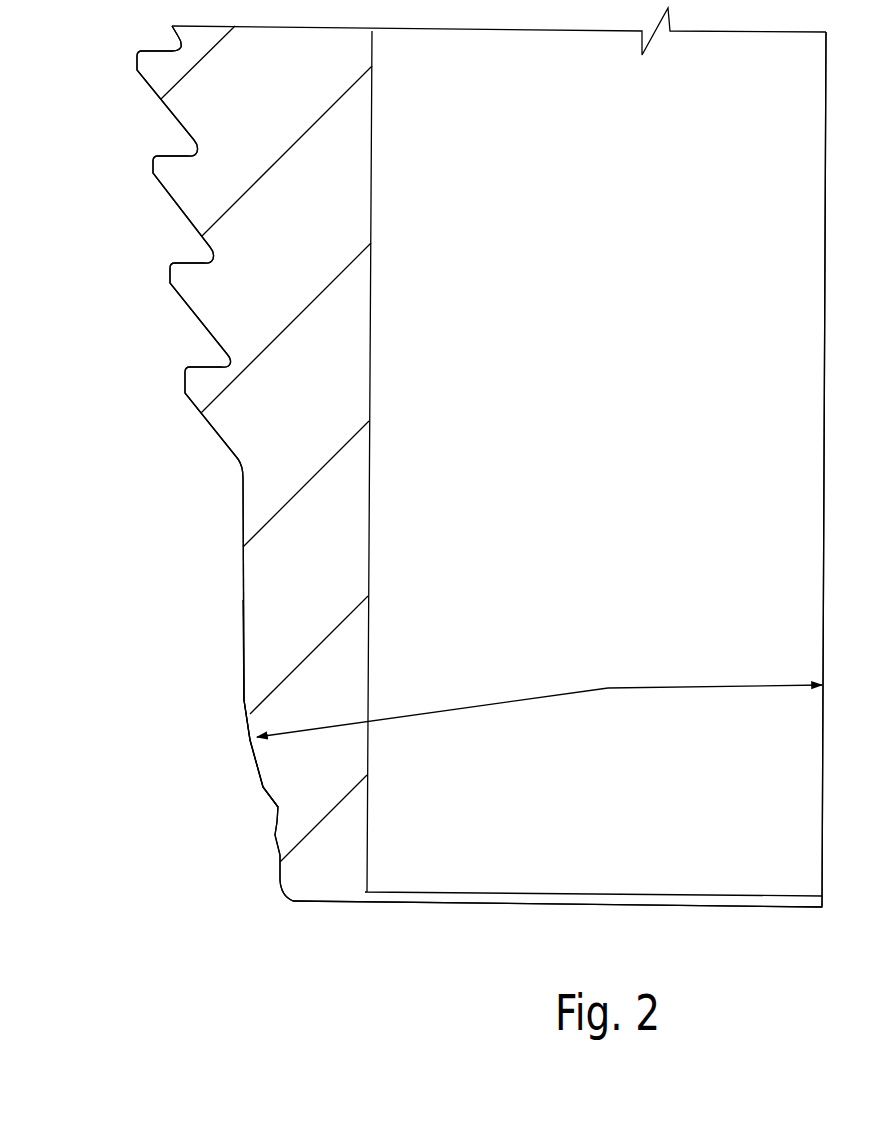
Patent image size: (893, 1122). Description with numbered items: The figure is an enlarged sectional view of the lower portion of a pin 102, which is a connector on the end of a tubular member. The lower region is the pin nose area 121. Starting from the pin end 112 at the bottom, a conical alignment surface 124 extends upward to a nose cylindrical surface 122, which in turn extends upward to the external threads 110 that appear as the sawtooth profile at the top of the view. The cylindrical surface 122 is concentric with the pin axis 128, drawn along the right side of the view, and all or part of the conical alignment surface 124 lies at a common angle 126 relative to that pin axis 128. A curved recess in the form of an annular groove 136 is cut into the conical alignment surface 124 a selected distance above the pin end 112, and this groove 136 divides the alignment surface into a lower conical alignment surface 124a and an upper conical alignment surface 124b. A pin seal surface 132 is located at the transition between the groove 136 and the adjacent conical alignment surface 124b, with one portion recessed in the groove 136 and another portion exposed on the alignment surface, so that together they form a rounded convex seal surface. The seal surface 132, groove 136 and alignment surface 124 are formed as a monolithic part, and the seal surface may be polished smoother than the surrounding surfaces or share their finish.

The pin 102 is at (198, 460).
The external threads 110 is at (165, 104).
The pin end 112 is at (330, 903).
The pin nose area 121 is at (242, 576).
The nose cylindrical surface 122 is at (242, 633).
The conical alignment surface 124 is at (249, 735).
The lower conical alignment surface 124a is at (253, 757).
The upper conical alignment surface 124b is at (280, 872).
The angle 126 is at (608, 688).
The pin axis 128 is at (824, 208).
The pin seal surface 132 is at (277, 840).
The annular groove 136 is at (278, 822).